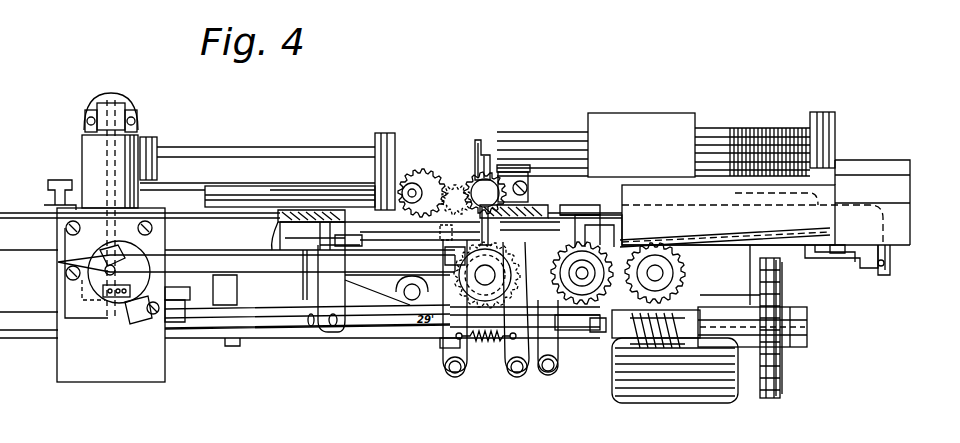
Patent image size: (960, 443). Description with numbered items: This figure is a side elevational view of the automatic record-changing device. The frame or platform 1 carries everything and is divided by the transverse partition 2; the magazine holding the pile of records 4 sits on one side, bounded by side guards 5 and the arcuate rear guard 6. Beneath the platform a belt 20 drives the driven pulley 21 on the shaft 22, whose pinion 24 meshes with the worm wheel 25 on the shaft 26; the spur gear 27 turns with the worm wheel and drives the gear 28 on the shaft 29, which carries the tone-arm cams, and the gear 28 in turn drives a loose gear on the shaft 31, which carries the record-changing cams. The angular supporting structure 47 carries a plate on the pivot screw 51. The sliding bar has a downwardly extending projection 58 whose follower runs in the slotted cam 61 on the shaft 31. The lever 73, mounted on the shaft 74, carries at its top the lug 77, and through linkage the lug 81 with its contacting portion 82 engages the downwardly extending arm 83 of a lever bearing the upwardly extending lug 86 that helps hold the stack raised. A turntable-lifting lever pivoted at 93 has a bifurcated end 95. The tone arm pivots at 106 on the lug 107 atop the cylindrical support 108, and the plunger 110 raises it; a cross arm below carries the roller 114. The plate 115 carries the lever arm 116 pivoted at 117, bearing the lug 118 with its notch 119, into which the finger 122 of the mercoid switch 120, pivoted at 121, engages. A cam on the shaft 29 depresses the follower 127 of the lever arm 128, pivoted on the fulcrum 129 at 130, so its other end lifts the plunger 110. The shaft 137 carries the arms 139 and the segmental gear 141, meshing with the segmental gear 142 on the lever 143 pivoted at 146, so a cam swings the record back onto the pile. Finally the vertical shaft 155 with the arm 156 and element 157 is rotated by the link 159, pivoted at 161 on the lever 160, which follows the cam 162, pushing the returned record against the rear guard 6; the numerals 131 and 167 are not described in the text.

The frame or platform 1 is at (905, 220).
The transverse partition 2 is at (480, 138).
The pile of records 4 is at (736, 128).
The side guards 5 is at (636, 128).
The rear guard 6 is at (835, 128).
The belt 20 is at (783, 380).
The driven pulley 21 is at (782, 290).
The shaft 22 is at (806, 345).
The pinion 24 is at (662, 346).
The worm wheel 25 is at (660, 278).
The shaft 26 is at (682, 290).
The spur gear 27 is at (684, 275).
The gear 28 is at (502, 252).
The shaft 29 is at (618, 245).
The shaft 31 is at (445, 346).
The angular supporting structure 47 is at (528, 186).
The pivot screw 51 is at (504, 168).
The downwardly extending projection 58 is at (503, 233).
The cam 61 is at (445, 263).
The lever 73 is at (560, 355).
The shaft 74 is at (550, 377).
The lug 77 is at (608, 215).
The lug 81 is at (863, 270).
The contacting portion 82 is at (882, 276).
The downwardly extending arm 83 is at (886, 263).
The upwardly extending lug 86 is at (834, 250).
The pivot 93 is at (404, 291).
The bifurcated end 95 is at (278, 238).
The pivot point 106 is at (86, 116).
The lug 107 is at (98, 125).
The cylindrical support 108 is at (90, 150).
The plunger 110 is at (82, 167).
The roller 114 is at (106, 262).
The plate 115 is at (68, 370).
The lever arm 116 is at (68, 325).
The pivot 117 is at (72, 279).
The lug 118 is at (108, 283).
The notch 119 is at (130, 310).
The mercoid switch 120 is at (180, 312).
The pivot 121 is at (151, 314).
The finger 122 is at (176, 292).
The follower 127 is at (592, 331).
The lever arm 128 is at (384, 318).
The fulcrum 129 is at (335, 327).
The fulcrum mounting 130 is at (314, 326).
The bar 131 is at (290, 272).
The shaft 137 is at (408, 190).
The arms 139 is at (234, 192).
The segmental gear 141 is at (420, 170).
The segmental gear 142 is at (444, 232).
The lever 143 is at (445, 343).
The pivot 146 is at (456, 378).
The shaft 155 is at (386, 134).
The arm 156 is at (260, 147).
The element 157 is at (158, 140).
The link 159 is at (350, 240).
The lever 160 is at (507, 376).
The pivotal connection 161 is at (562, 200).
The cam 162 is at (486, 344).
The arm 167 is at (600, 333).